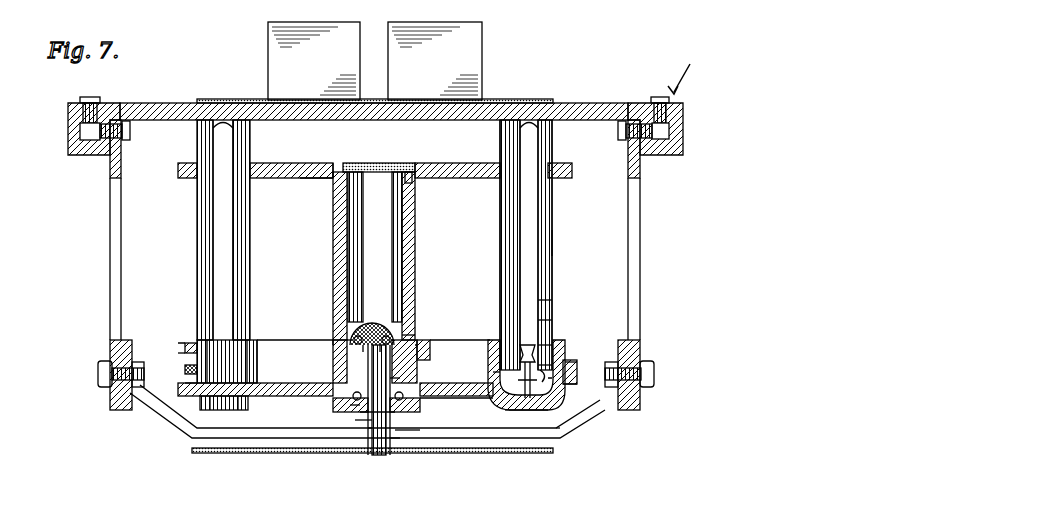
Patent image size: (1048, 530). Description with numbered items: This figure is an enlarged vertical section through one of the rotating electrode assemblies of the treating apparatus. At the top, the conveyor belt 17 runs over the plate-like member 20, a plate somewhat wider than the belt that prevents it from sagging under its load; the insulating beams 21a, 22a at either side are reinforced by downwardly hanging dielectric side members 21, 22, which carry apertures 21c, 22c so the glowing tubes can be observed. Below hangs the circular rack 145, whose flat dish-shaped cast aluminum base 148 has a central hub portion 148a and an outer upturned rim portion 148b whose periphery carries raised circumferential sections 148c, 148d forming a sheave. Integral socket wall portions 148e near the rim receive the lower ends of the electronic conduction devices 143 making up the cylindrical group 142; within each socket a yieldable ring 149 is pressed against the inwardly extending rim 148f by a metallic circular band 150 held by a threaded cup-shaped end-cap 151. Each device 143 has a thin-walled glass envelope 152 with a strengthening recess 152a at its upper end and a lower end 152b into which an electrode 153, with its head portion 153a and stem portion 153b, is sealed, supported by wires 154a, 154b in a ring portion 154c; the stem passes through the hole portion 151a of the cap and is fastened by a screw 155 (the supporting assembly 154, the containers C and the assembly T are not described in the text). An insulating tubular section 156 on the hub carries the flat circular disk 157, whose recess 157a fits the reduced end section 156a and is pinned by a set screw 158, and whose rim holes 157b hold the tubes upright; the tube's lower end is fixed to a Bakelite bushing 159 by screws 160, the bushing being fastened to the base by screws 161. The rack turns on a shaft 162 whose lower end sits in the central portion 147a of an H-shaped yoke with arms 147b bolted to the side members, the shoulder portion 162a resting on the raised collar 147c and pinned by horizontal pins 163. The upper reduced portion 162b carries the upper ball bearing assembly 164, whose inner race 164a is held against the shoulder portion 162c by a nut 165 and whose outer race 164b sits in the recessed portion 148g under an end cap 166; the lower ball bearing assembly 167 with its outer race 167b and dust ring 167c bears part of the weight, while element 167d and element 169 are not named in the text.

The conveyor belt 17 is at (545, 99).
The plate-like member 20 is at (160, 103).
The side member 21 is at (110, 166).
The insulating beam 21a is at (68, 143).
The aperture 21c is at (110, 247).
The side member 22 is at (640, 162).
The insulating beam 22a is at (683, 146).
The aperture 22c is at (640, 241).
The cylindrical group 142 is at (562, 247).
The electronic conduction device 143 is at (215, 248).
The circular rack 145 is at (190, 333).
The central portion of yoke 147a is at (425, 400).
The yoke arms 147b is at (188, 440).
The raised collar 147c is at (395, 440).
The base 148 is at (300, 330).
The hub portion 148a is at (422, 345).
The upturned rim portion 148b is at (188, 337).
The raised circumferential section 148c is at (185, 347).
The raised circumferential section 148d is at (200, 383).
The socket wall portion 148e is at (258, 360).
The inwardly extending rim 148f is at (550, 365).
The recessed portion 148g is at (334, 342).
The ring 149 is at (493, 345).
The metallic circular band 150 is at (493, 372).
The cup-shaped end-cap 151 is at (220, 410).
The hole portion 151a is at (560, 430).
The glass envelope 152 is at (500, 233).
The recessed upper end 152a is at (233, 125).
The lower end 152b is at (548, 345).
The electrode 153 is at (545, 320).
The head portion 153a is at (545, 300).
The stem portion 153b is at (556, 388).
The bearing cup 154 is at (532, 375).
The supporting wire 154a is at (508, 412).
The supporting wire 154b is at (566, 362).
The supporting ring portion 154c is at (527, 412).
The screw 155 is at (542, 412).
The insulating tubular section 156 is at (426, 255).
The reduced end section 156a is at (318, 180).
The flat circular disk 157 is at (455, 163).
The recess 157a is at (338, 168).
The hole portions 157b is at (195, 178).
The pin or set screw 158 is at (405, 164).
The Bakelite bushing 159 is at (340, 345).
The screws 160 is at (345, 360).
The screws 161 is at (355, 400).
The shaft 162 is at (395, 370).
The shoulder portion 162a is at (370, 430).
The upper reduced portion 162b is at (372, 340).
The shoulder portion 162c is at (380, 340).
The horizontal pins 163 is at (372, 422).
The upper ball bearing assembly 164 is at (410, 340).
The inner race 164a is at (406, 335).
The outer race 164b is at (415, 345).
The nut 165 is at (366, 335).
The end cap 166 is at (360, 330).
The lower ball bearing assembly 167 is at (393, 407).
The outer race 167b is at (352, 407).
The dust ring 167c is at (420, 432).
The coupling portion 167d is at (400, 378).
The seal 169 is at (185, 369).
The container C is at (375, 61).
The top assembly T is at (685, 69).